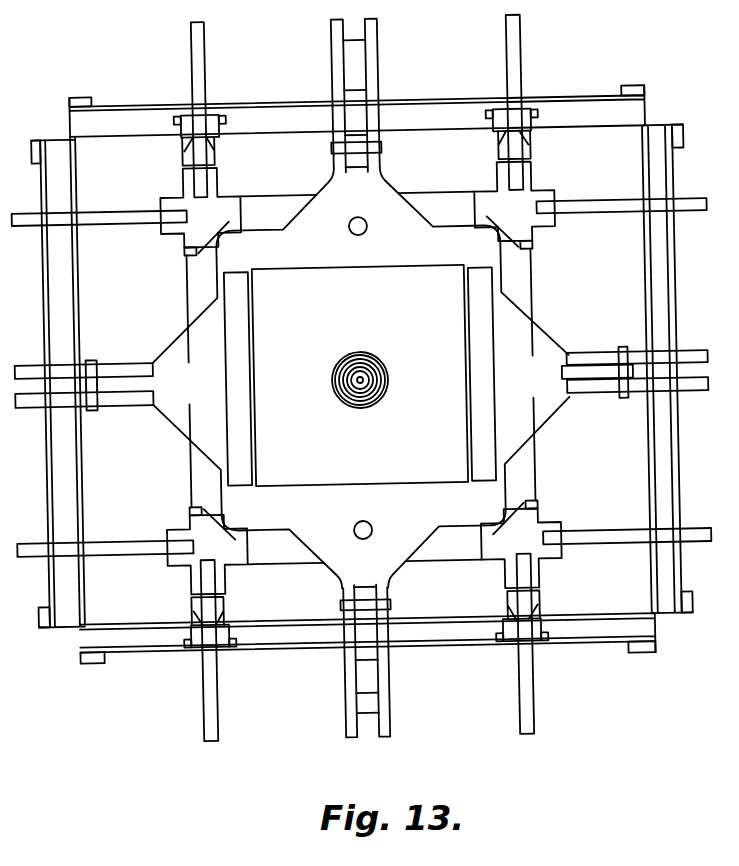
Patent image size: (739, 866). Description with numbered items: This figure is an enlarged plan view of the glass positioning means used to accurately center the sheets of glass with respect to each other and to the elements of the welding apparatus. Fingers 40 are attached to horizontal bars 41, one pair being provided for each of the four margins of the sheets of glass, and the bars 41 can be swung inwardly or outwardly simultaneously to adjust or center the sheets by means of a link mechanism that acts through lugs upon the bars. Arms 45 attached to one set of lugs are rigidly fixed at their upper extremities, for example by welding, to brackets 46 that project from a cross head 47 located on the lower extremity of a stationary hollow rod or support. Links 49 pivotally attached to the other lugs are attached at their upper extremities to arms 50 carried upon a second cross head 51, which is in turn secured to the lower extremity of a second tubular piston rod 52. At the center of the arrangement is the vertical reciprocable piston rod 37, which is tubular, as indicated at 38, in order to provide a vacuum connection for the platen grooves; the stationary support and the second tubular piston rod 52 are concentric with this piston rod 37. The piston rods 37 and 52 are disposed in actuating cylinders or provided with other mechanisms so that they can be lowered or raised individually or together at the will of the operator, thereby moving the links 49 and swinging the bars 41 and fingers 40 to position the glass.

The piston rod 37 is at (375, 383).
The tubular bore of piston rod 38 is at (358, 386).
The fingers 40 is at (88, 99).
The horizontal bars 41 is at (668, 450).
The arms 45 is at (102, 204).
The brackets 46 is at (206, 79).
The cross head 47 is at (193, 288).
The links 49 is at (357, 60).
The arms 50 is at (376, 80).
The cross head 51 is at (400, 240).
The second tubular piston rod 52 is at (387, 365).